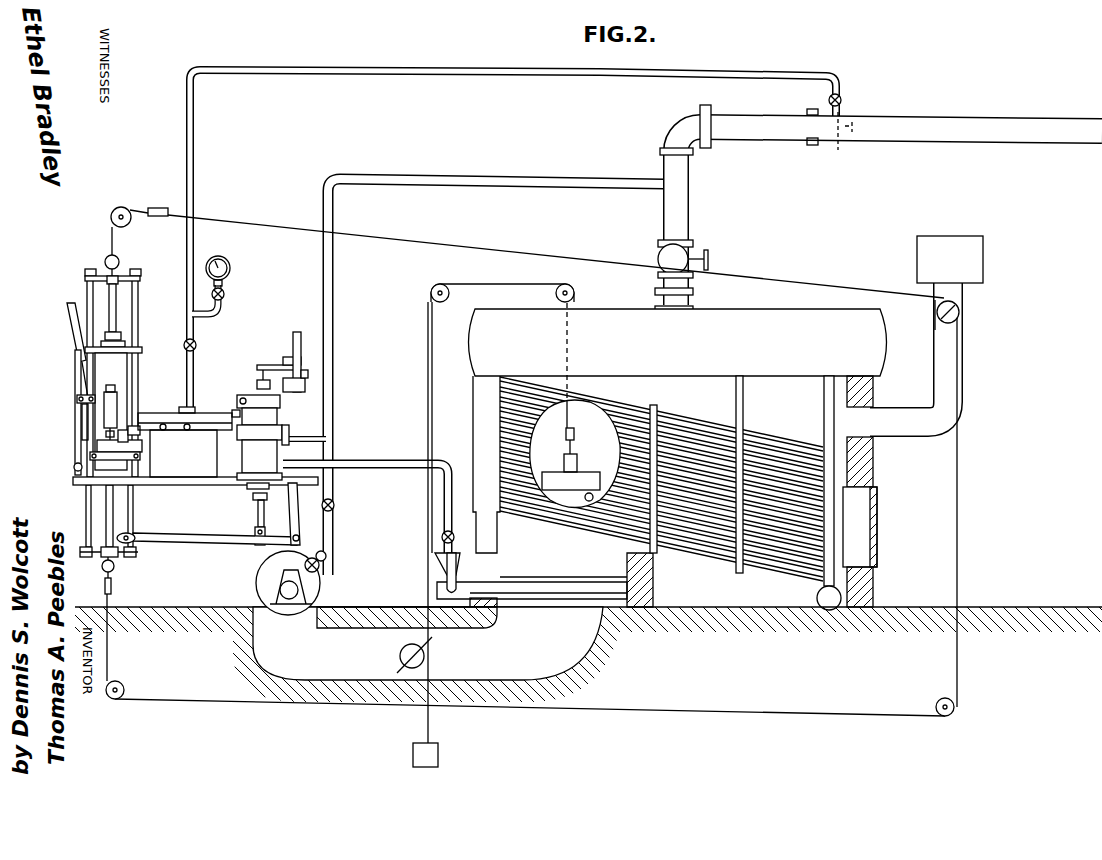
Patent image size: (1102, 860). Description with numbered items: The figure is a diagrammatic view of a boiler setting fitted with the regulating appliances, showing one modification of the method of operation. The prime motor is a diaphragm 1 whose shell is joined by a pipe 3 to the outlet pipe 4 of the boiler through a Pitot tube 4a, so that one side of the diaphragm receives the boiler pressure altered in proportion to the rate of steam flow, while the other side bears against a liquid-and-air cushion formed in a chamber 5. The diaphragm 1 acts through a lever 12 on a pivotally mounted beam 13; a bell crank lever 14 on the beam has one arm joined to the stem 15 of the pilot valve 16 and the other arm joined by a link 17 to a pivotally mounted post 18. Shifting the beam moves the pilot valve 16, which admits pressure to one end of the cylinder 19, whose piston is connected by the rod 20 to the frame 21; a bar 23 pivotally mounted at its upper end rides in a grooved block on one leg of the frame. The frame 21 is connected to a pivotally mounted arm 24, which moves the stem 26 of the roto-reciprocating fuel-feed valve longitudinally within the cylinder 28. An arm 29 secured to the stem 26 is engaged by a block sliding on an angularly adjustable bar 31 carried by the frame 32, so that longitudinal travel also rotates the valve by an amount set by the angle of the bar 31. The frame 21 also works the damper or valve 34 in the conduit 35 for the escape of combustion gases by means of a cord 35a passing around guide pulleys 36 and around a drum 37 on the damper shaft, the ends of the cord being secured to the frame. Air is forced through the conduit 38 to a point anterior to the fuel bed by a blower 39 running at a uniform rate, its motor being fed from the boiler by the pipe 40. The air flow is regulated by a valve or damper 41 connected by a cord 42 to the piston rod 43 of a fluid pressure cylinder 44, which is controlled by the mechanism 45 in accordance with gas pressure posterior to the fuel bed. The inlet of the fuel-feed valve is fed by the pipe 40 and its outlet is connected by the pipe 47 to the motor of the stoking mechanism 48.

The diaphragm 1 is at (199, 420).
The pipe 3 is at (398, 69).
The outlet pipe 4 is at (925, 134).
The Pitot tube 4a is at (860, 164).
The chamber 5 is at (183, 453).
The lever 12 is at (140, 421).
The beam 13 is at (120, 462).
The bell crank lever 14 is at (85, 412).
The stem 15 is at (108, 443).
The pilot valve 16 is at (118, 402).
The link 17 is at (78, 404).
The post 18 is at (80, 431).
The cylinder 19 is at (108, 373).
The rod 20 is at (116, 296).
The frame 21 is at (138, 320).
The bar 23 is at (66, 323).
The arm 24 is at (188, 540).
The stem 26 is at (258, 375).
The cylinder 28 is at (264, 454).
The arm 29 is at (273, 364).
The bar 31 is at (297, 336).
The frame 32 is at (305, 362).
The damper or valve 34 is at (938, 318).
The conduit 35 is at (935, 366).
The cord 35a is at (682, 714).
The guide pulleys 36 is at (130, 224).
The drum 37 is at (961, 312).
The conduit 38 is at (428, 643).
The blower 39 is at (255, 580).
The pipe 40 is at (334, 390).
The valve or damper 41 is at (432, 637).
The cord 42 is at (506, 286).
The piston rod 43 is at (576, 432).
The fluid pressure cylinder 44 is at (578, 458).
The controlling mechanism 45 is at (573, 490).
The pipe 47 is at (376, 463).
The stoking mechanism 48 is at (482, 592).